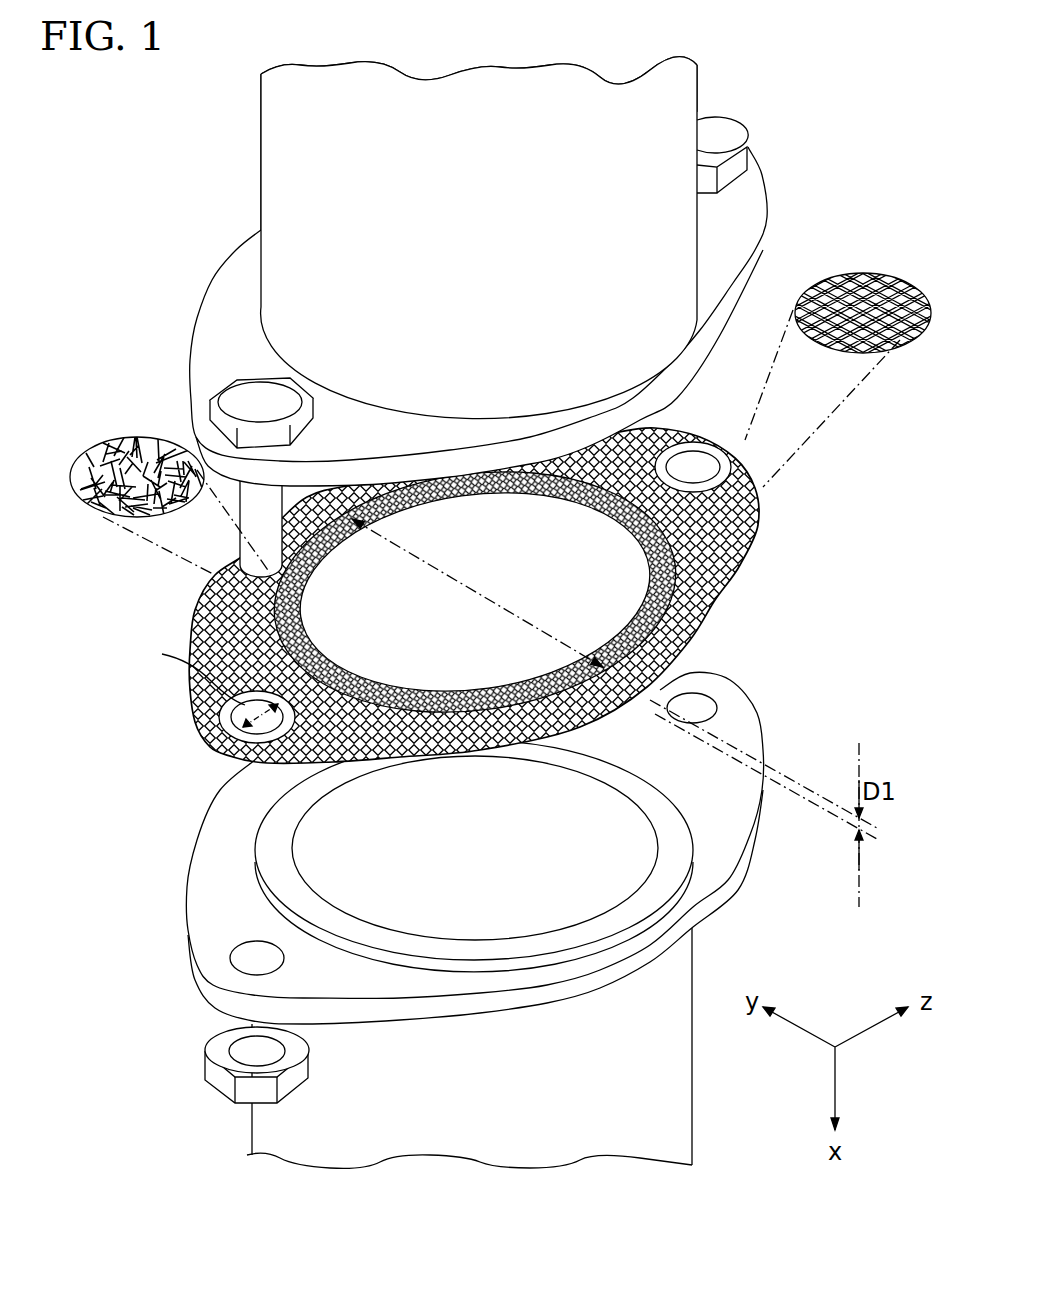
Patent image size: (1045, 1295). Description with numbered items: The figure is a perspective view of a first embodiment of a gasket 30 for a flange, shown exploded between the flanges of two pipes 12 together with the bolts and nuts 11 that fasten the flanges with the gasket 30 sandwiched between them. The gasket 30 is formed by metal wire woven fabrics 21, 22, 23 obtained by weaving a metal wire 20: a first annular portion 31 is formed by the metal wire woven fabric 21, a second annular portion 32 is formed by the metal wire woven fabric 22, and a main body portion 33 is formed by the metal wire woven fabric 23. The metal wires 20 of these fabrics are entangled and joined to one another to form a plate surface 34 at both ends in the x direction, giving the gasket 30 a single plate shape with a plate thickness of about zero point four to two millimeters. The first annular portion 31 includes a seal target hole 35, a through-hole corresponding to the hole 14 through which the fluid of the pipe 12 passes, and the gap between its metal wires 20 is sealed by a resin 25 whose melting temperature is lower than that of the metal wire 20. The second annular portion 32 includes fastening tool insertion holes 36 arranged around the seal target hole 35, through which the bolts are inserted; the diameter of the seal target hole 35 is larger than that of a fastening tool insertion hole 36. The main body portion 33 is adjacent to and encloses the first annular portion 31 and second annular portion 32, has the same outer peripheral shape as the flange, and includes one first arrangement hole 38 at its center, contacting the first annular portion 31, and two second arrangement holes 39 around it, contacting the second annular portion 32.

The nut 11 is at (205, 1072).
The pipe 12 is at (261, 156).
The hole 14 is at (487, 872).
The metal wire 20 is at (526, 380).
The metal wire woven fabric 21 is at (100, 440).
The metal wire woven fabric 22 is at (705, 455).
The metal wire woven fabric 23 is at (866, 275).
The resin 25 is at (178, 440).
The gasket 30 is at (469, 581).
The first annular portion 31 is at (663, 558).
The second annular portion 32 is at (235, 732).
The main body portion 33 is at (752, 590).
The plate surface 34 is at (259, 652).
The seal target hole 35 is at (482, 560).
The fastening tool insertion hole 36 is at (197, 705).
The first arrangement hole 38 is at (693, 622).
The second arrangement hole 39 is at (222, 720).